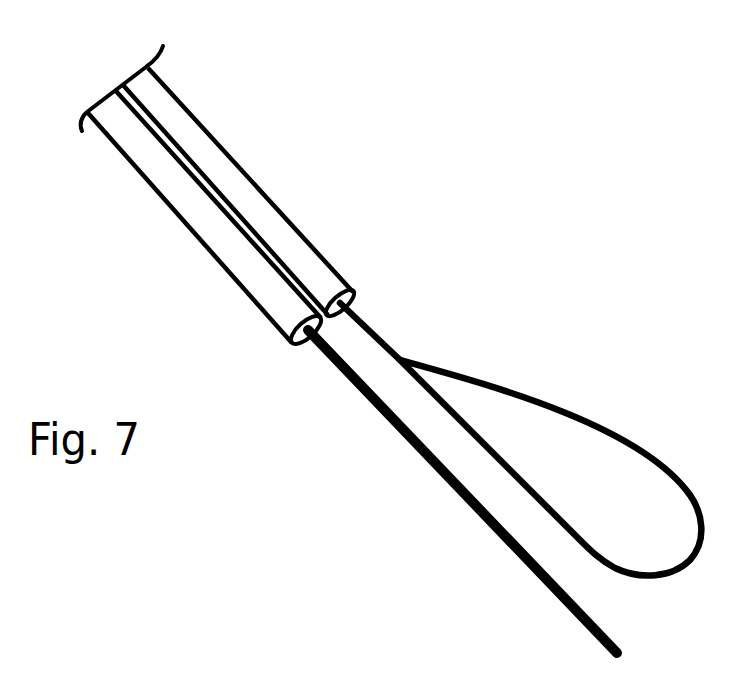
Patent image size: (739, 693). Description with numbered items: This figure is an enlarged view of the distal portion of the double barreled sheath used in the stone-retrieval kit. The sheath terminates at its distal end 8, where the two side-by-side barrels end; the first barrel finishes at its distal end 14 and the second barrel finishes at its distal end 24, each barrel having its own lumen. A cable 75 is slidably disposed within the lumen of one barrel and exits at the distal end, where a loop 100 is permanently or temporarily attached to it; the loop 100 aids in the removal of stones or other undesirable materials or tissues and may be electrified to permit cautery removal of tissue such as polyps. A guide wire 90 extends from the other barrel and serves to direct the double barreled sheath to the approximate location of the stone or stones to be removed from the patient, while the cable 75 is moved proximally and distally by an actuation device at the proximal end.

The distal end 8 is at (282, 313).
The distal end 14 is at (163, 184).
The distal end 24 is at (180, 130).
The cable 75 is at (360, 320).
The guide wire 90 is at (447, 487).
The loop 100 is at (585, 414).